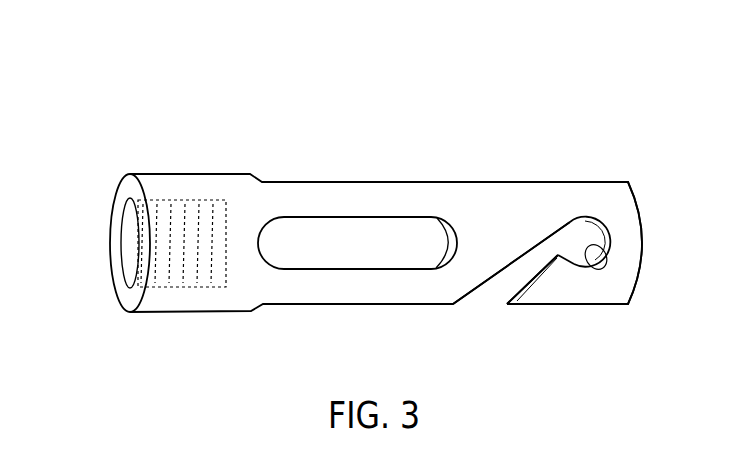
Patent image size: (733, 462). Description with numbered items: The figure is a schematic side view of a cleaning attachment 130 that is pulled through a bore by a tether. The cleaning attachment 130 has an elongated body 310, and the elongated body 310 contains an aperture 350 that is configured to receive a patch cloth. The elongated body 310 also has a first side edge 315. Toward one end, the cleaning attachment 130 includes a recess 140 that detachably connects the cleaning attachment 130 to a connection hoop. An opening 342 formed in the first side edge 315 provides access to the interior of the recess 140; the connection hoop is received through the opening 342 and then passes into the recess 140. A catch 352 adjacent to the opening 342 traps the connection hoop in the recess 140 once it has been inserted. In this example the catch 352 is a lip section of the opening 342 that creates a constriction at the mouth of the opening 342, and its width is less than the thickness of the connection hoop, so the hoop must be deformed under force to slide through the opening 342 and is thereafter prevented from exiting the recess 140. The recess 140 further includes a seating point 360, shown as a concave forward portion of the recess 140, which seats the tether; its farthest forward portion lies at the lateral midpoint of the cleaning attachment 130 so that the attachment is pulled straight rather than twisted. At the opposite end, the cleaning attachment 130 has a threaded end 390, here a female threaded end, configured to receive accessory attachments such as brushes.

The cleaning attachment 130 is at (407, 193).
The recess 140 is at (572, 163).
The elongated body 310 is at (360, 193).
The first side edge 315 is at (343, 317).
The opening 342 is at (480, 307).
The aperture 350 is at (312, 240).
The catch 352 is at (558, 267).
The seating point 360 is at (587, 268).
The threaded end 390 is at (172, 212).